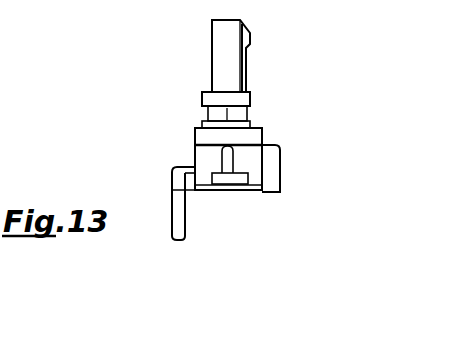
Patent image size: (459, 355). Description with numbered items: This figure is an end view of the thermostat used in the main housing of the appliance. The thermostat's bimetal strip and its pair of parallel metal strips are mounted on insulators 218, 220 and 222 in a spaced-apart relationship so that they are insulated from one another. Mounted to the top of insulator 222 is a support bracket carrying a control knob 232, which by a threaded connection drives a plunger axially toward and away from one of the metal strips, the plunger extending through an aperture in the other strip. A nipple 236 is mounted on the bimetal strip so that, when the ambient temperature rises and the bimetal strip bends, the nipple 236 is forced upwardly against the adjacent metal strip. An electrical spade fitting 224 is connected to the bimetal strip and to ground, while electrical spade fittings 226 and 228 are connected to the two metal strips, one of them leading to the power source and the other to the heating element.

The control knob 232 is at (211, 46).
The insulator 222 is at (263, 136).
The insulator 220 is at (204, 153).
The electrical spade fitting 228 is at (280, 163).
The insulator 218 is at (253, 173).
The nipple 236 is at (242, 189).
The electrical spade fitting 226 is at (172, 178).
The electrical spade fitting 224 is at (185, 228).